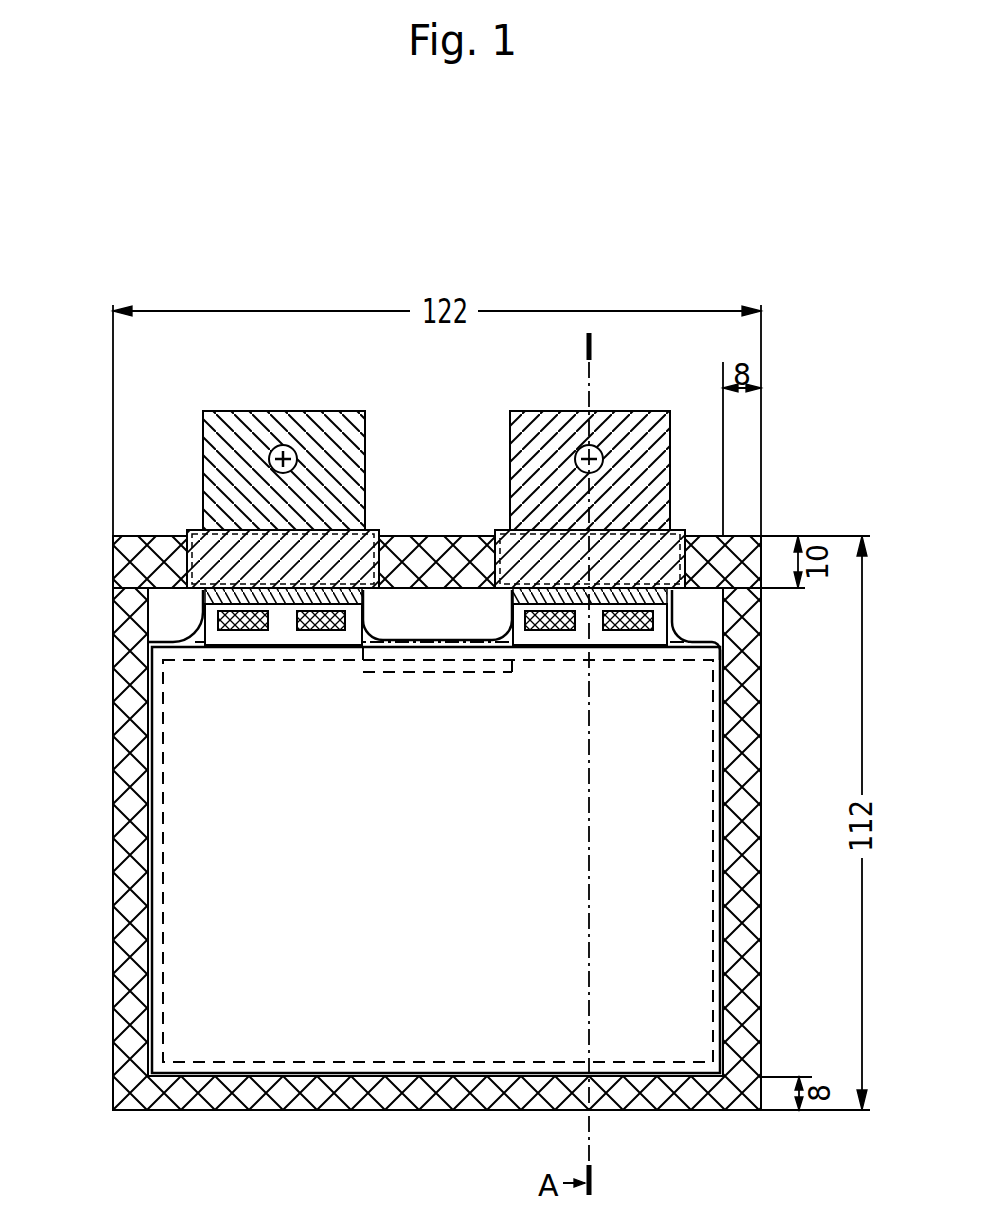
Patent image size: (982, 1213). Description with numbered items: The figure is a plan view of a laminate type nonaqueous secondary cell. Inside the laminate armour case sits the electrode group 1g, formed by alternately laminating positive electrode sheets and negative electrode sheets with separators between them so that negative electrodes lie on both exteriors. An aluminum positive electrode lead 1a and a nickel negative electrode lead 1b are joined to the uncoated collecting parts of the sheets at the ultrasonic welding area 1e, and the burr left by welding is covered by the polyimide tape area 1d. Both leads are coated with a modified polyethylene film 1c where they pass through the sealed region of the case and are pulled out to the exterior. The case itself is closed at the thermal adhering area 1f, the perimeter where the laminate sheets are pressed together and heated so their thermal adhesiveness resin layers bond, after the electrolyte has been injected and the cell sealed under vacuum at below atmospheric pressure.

The positive electrode lead 1a is at (228, 412).
The negative electrode lead 1b is at (517, 465).
The modified polyethylene film 1c is at (113, 545).
The polyimide tape area 1d is at (204, 618).
The ultrasonic welding area 1e is at (247, 632).
The thermal adhering area 1f is at (777, 707).
The electrode group 1g is at (200, 832).